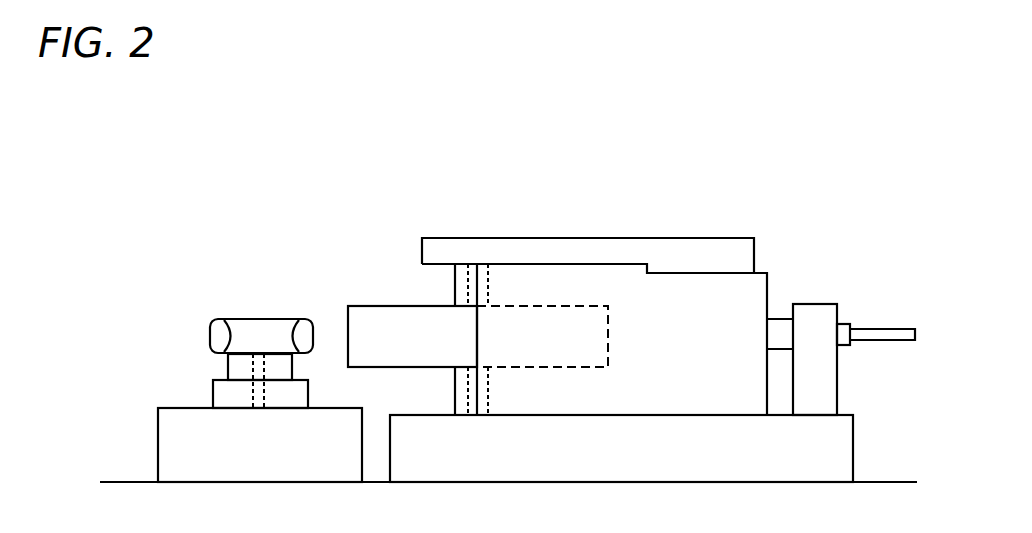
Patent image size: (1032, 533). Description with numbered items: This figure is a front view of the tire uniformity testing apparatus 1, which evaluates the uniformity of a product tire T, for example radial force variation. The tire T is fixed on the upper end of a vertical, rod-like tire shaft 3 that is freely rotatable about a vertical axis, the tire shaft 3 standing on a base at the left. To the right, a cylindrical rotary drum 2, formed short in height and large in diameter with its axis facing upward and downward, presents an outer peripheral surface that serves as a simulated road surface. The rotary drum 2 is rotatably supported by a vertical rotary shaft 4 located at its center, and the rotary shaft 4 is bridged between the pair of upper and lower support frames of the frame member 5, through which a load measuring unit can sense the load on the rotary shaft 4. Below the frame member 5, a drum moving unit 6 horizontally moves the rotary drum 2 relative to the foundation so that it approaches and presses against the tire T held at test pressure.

The tire uniformity testing apparatus 1 is at (830, 138).
The rotary drum 2 is at (413, 305).
The tire shaft 3 is at (252, 369).
The rotary shaft 4 is at (487, 303).
The frame member 5 is at (557, 238).
The drum moving unit 6 is at (854, 425).
The tire T is at (213, 319).